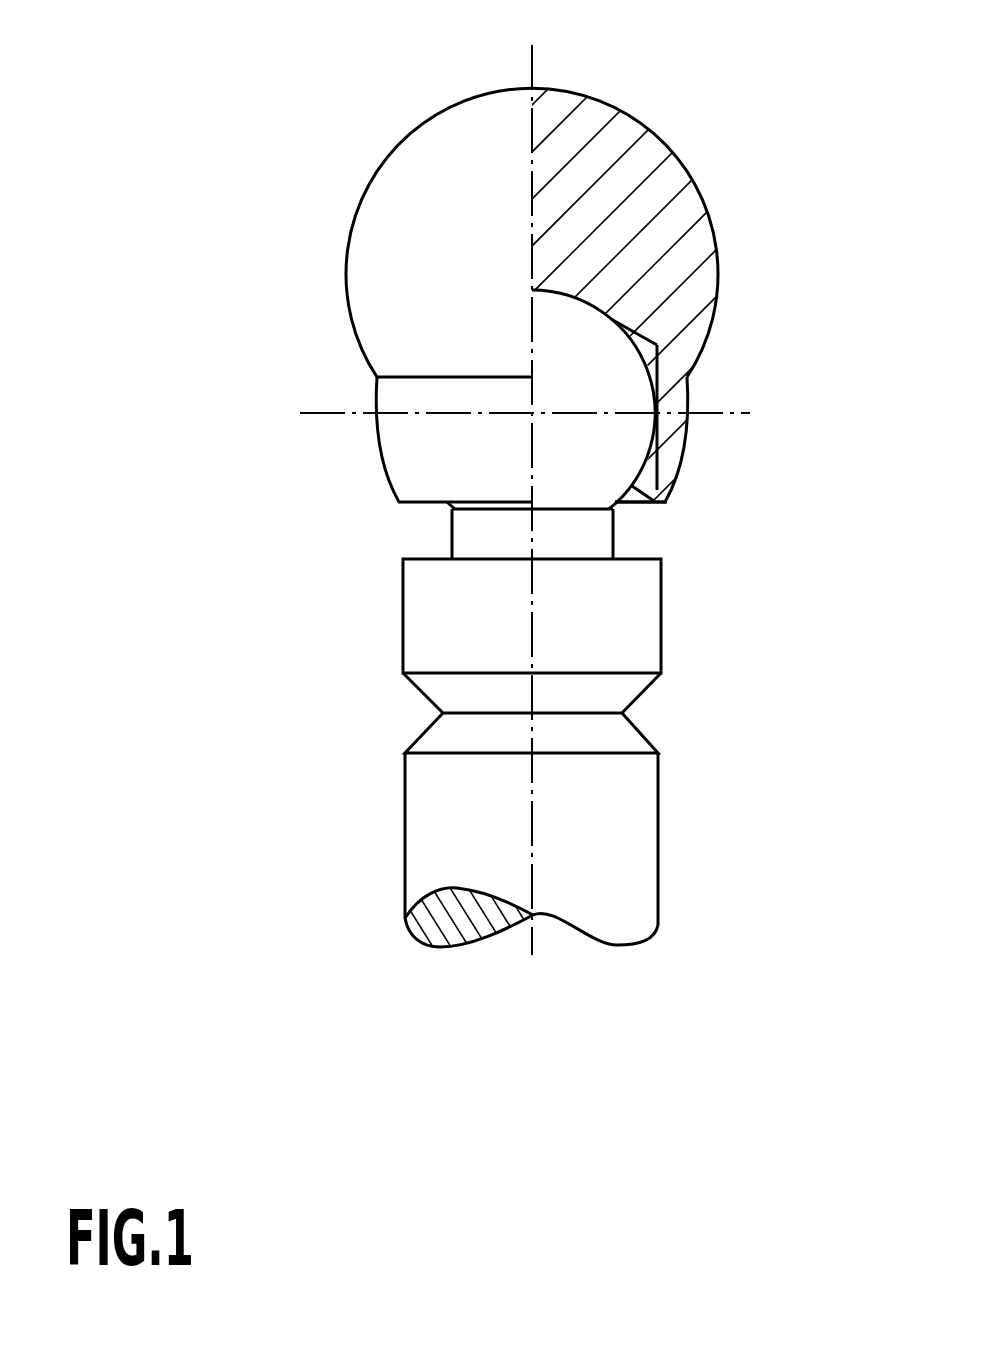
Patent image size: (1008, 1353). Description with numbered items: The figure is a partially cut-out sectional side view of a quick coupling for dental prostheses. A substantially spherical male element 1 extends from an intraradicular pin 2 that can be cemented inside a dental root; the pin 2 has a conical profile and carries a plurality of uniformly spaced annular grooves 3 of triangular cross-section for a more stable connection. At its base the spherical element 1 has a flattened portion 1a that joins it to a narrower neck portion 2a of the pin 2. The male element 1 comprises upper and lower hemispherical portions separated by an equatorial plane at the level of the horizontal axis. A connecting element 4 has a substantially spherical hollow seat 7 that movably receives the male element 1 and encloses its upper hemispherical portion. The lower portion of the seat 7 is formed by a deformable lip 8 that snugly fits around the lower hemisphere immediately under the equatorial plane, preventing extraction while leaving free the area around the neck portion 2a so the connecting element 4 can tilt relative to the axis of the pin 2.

The connecting element 4 is at (664, 122).
The spherical male element 1 is at (600, 403).
The spherical hollow seat 7 is at (582, 312).
The lip 8 is at (672, 458).
The flattened portion 1a is at (560, 512).
The neck portion 2a is at (488, 533).
The annular grooves 3 is at (650, 743).
The intraradicular pin 2 is at (625, 872).